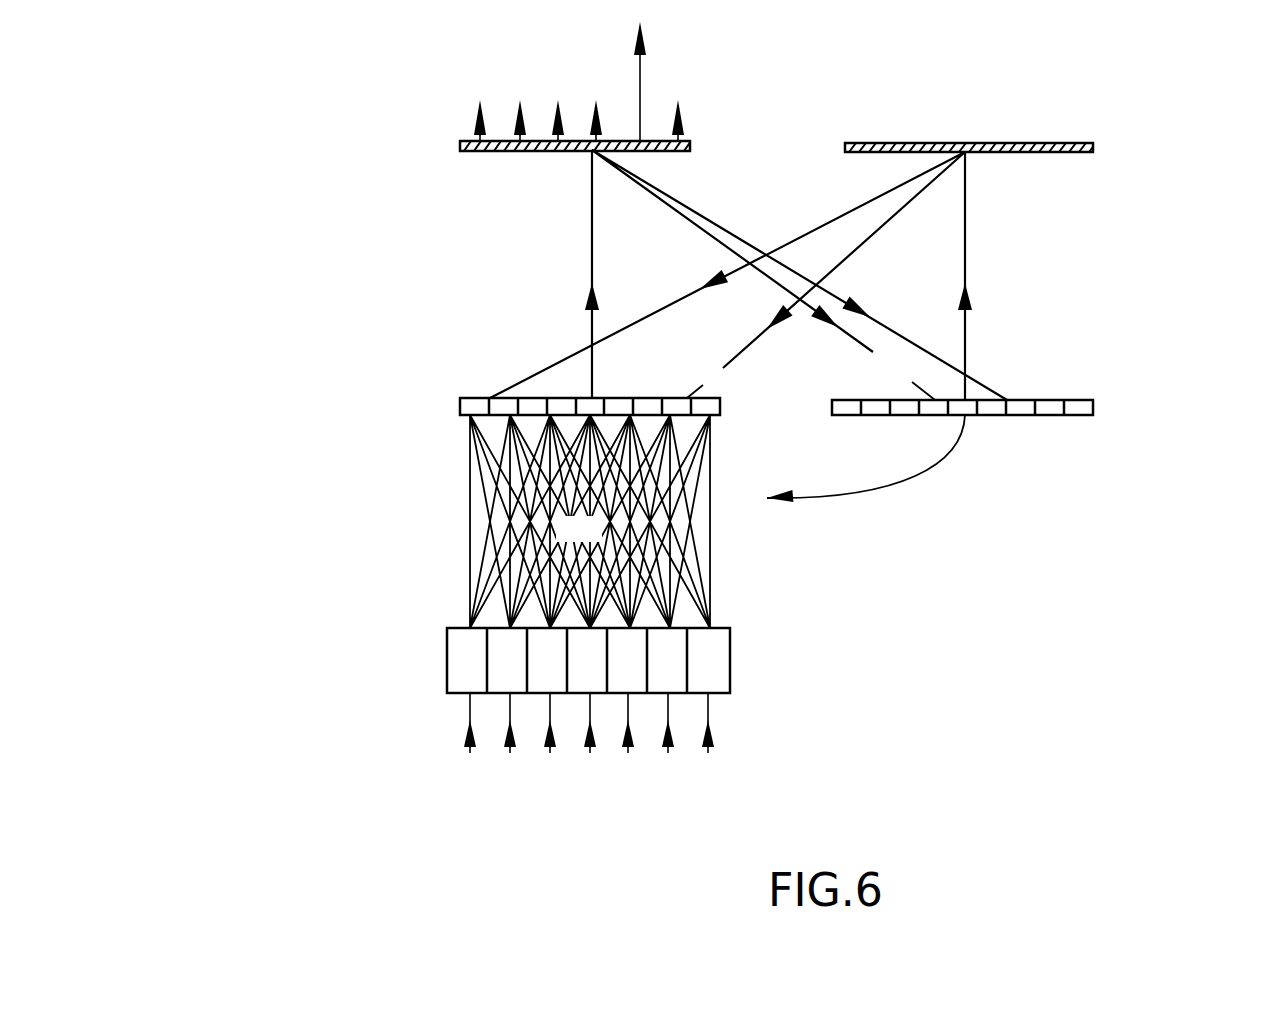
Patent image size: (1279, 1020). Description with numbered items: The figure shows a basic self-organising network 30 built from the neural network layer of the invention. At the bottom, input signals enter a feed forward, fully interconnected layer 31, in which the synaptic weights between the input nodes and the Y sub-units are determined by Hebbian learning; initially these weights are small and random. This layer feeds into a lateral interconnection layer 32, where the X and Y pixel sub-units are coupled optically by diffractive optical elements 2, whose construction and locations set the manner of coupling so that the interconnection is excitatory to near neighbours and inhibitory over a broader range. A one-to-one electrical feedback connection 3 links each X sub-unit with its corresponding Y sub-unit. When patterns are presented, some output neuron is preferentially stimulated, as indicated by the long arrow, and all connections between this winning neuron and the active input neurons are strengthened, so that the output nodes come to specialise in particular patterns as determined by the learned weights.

The diffractive optical elements 2 is at (683, 118).
The electrical feedback connection 3 is at (880, 492).
The self-organising network 30 is at (433, 245).
The feed forward fully interconnected layer 31 is at (450, 568).
The lateral interconnection layer 32 is at (1180, 165).